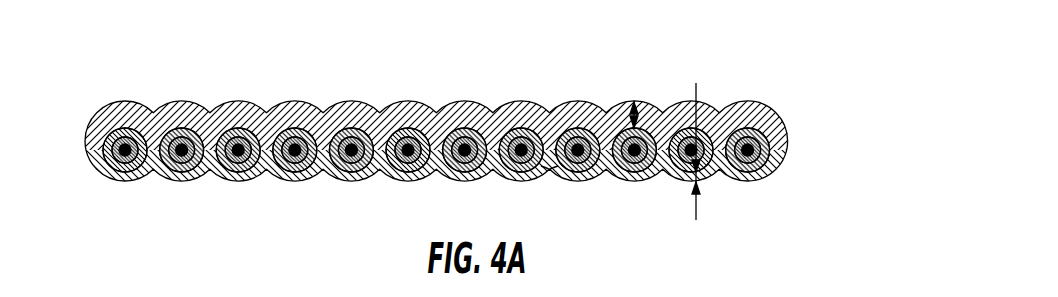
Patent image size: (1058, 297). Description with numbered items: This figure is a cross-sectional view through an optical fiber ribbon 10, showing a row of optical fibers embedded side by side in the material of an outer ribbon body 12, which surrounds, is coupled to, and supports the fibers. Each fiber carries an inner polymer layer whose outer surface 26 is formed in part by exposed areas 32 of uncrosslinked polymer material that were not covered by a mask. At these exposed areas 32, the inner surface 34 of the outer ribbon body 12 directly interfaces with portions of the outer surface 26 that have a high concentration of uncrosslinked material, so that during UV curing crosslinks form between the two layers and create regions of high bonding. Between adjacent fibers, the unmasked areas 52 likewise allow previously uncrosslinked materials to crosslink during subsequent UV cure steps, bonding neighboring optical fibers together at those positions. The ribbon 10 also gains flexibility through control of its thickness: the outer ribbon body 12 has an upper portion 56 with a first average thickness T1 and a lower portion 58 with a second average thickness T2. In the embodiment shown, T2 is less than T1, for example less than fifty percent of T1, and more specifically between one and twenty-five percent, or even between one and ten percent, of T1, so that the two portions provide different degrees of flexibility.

The optical fiber ribbon 10 is at (496, 136).
The outer ribbon body 12 is at (474, 145).
The outer surface 26 is at (238, 107).
The exposed areas 32 is at (356, 112).
The inner surface 34 is at (290, 160).
The unmasked areas 52 is at (554, 178).
The upper portion 56 is at (764, 104).
The lower portion 58 is at (763, 184).
The first average thickness T1 is at (619, 100).
The second average thickness T2 is at (697, 208).